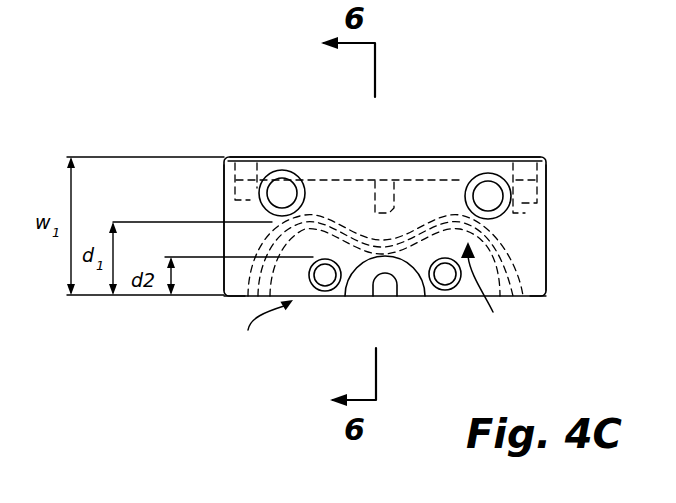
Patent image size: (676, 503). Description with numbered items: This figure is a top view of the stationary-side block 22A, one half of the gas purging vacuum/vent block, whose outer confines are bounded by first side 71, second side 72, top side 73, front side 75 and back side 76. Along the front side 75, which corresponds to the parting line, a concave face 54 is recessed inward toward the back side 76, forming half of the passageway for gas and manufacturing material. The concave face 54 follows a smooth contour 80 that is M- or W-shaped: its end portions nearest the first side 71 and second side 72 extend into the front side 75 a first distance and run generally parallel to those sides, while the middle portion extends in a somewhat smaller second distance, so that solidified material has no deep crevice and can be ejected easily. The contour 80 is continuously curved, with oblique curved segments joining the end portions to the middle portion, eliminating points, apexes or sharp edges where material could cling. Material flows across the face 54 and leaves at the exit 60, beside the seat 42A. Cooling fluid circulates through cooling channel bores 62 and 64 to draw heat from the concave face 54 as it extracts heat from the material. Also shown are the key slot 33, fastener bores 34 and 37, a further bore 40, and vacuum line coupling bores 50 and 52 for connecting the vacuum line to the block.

The stationary-side block 22A is at (540, 233).
The key slot 33 is at (362, 172).
The fastener bore 34 is at (249, 184).
The fastener bore 37 is at (530, 177).
The bore 40 is at (386, 192).
The seat 42A is at (358, 280).
The vacuum line coupling bore 50 is at (323, 283).
The vacuum line coupling bore 52 is at (445, 282).
The concave face 54 is at (264, 329).
The exit 60 is at (384, 285).
The cooling channel bore 62 is at (489, 196).
The cooling channel bore 64 is at (287, 196).
The first side 71 is at (230, 204).
The second side 72 is at (549, 256).
The top side 73 is at (532, 273).
The front side 75 is at (229, 297).
The back side 76 is at (267, 157).
The contour 80 is at (491, 290).